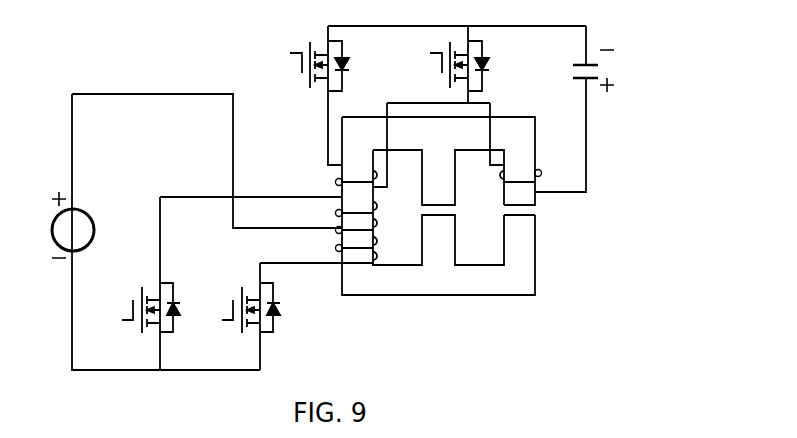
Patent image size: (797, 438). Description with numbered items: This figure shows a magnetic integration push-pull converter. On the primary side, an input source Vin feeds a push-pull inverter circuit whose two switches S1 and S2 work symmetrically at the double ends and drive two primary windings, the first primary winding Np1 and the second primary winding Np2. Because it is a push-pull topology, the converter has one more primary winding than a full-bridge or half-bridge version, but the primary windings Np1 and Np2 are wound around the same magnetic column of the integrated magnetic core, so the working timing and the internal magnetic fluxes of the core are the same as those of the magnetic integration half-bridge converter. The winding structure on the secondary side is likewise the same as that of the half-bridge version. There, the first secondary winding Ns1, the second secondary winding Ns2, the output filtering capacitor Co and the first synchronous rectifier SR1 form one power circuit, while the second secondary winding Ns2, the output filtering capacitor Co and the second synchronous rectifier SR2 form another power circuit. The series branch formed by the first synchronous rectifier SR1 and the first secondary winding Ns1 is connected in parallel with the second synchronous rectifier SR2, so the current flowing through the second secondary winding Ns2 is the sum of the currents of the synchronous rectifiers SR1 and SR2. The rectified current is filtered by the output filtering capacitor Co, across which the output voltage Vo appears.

The input voltage source Vin is at (52, 225).
The primary switch S1 is at (222, 283).
The primary switch S2 is at (287, 316).
The first synchronous rectifier SR1 is at (304, 95).
The second synchronous rectifier SR2 is at (438, 106).
The output filtering capacitor Co is at (566, 109).
The output voltage Vo is at (624, 71).
The first secondary winding Ns1 is at (336, 180).
The second secondary winding Ns2 is at (538, 176).
The first primary winding Np1 is at (336, 216).
The second primary winding Np2 is at (336, 246).